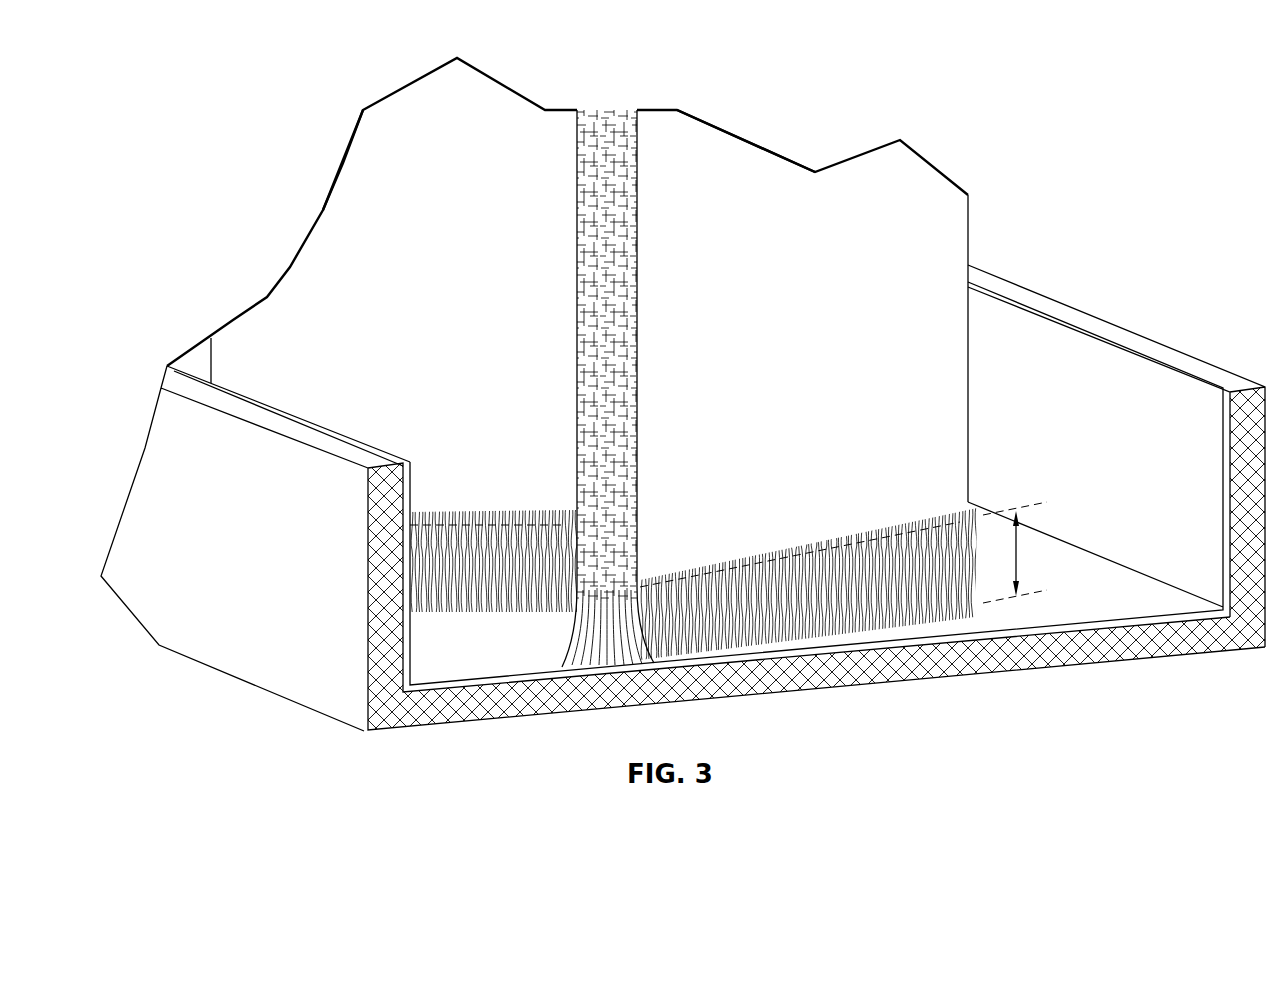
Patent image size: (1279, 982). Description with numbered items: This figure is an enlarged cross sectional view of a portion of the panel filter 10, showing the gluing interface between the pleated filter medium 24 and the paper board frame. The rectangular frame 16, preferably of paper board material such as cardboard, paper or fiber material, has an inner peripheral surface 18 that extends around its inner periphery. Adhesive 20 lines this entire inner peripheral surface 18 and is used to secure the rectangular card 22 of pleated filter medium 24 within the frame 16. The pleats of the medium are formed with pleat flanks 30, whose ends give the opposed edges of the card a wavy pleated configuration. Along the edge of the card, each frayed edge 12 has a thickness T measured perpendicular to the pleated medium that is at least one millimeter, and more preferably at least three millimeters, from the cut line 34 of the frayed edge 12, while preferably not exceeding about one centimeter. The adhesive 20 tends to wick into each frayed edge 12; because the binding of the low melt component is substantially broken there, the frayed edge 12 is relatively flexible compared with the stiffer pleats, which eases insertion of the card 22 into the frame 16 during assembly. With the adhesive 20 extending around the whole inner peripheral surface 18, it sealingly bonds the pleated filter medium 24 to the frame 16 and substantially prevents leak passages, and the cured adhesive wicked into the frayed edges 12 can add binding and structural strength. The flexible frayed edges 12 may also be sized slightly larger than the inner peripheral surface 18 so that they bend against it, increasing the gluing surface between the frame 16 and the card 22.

The panel filter 10 is at (683, 415).
The frayed edge 12 is at (750, 627).
The rectangular frame 16 is at (483, 710).
The inner peripheral surface 18 is at (1140, 618).
The adhesive 20 is at (1078, 593).
The rectangular card 22 is at (380, 102).
The pleated filter medium 24 is at (445, 77).
The pleat flanks 30 is at (355, 178).
The cut line 34 is at (530, 583).
The thickness T is at (1018, 552).